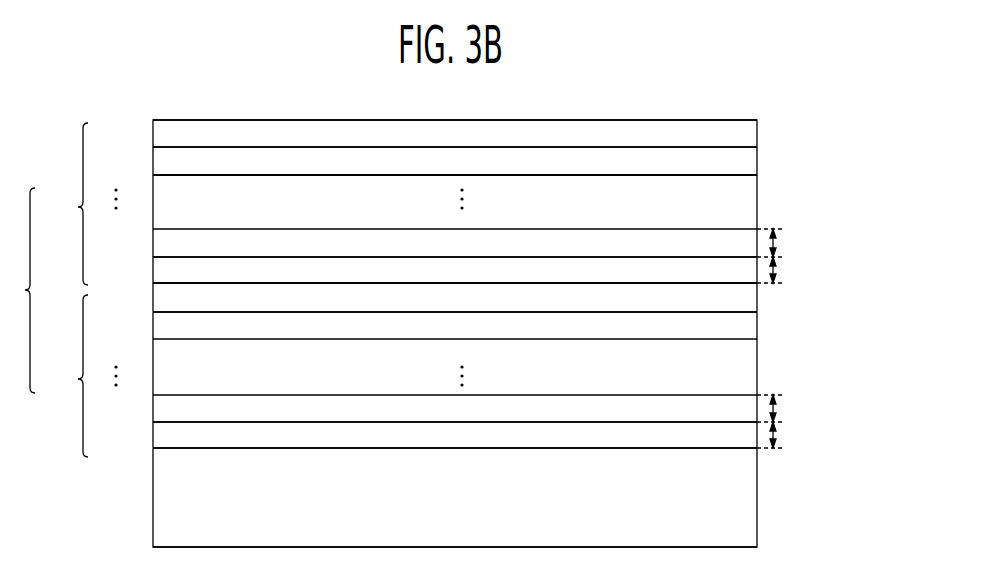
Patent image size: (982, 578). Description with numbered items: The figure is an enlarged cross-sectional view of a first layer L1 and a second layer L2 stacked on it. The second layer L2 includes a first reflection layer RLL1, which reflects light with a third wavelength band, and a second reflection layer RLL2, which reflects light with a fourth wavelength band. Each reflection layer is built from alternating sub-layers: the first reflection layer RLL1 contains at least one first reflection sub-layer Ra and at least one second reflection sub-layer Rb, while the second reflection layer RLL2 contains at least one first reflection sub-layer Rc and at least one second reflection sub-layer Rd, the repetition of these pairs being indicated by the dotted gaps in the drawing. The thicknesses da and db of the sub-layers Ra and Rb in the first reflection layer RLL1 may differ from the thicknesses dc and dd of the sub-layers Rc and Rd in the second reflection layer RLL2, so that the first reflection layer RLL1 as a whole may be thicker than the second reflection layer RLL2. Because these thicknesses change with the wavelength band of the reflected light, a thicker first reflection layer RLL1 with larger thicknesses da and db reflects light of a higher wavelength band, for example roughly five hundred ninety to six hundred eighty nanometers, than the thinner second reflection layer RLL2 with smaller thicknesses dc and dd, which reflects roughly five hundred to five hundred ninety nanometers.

The second reflection sub-layer Rd is at (153, 243).
The first reflection sub-layer Rc is at (153, 270).
The second reflection sub-layer Rb is at (153, 409).
The first reflection sub-layer Ra is at (153, 436).
The first layer L1 is at (160, 494).
The second layer L2 is at (20, 290).
The first reflection layer RLL1 is at (62, 376).
The second reflection layer RLL2 is at (61, 204).
The thickness of second reflection sub-layer Rd dd is at (778, 245).
The thickness of first reflection sub-layer Rc dc is at (778, 272).
The thickness of second reflection sub-layer Rb db is at (778, 408).
The thickness of first reflection sub-layer Ra da is at (778, 435).